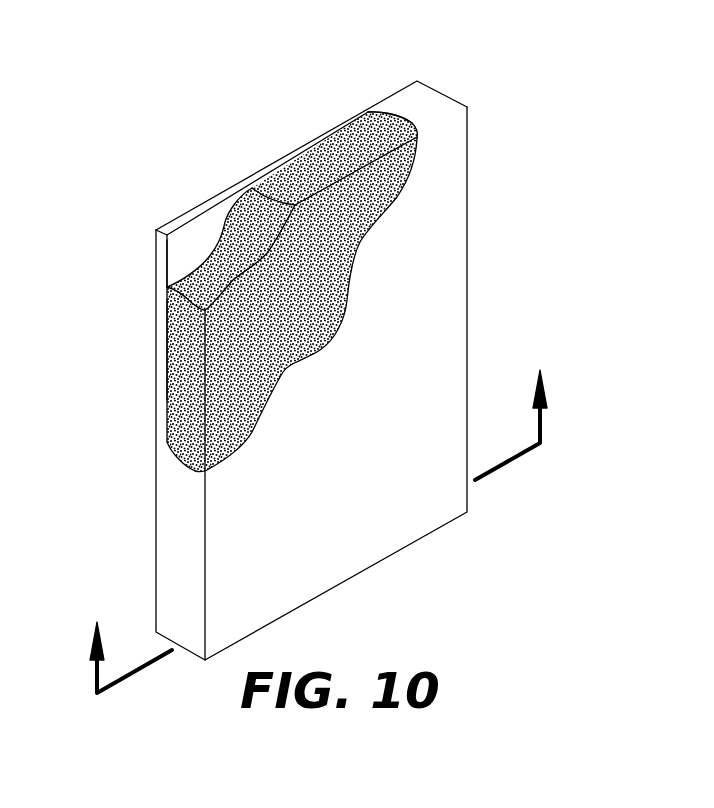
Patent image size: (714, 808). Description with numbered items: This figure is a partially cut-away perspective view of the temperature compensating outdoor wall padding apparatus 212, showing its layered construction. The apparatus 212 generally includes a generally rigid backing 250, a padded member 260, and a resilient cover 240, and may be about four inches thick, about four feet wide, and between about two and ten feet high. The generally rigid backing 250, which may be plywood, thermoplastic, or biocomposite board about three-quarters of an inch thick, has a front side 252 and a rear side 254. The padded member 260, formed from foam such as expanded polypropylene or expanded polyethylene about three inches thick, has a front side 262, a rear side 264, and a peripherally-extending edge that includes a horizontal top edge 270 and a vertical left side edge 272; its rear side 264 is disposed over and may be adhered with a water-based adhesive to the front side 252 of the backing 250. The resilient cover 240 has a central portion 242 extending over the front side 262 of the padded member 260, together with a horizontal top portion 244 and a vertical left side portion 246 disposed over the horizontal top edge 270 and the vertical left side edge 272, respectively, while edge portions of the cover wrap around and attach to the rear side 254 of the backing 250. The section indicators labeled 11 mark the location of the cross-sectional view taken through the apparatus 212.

The temperature compensating outdoor wall padding apparatus 212 is at (157, 97).
The resilient cover 240 is at (315, 369).
The central portion 242 is at (430, 245).
The horizontal top portion 244 is at (435, 107).
The vertical left side portion 246 is at (167, 512).
The generally rigid backing 250 is at (292, 142).
The front side 252 is at (172, 256).
The rear side 254 is at (168, 226).
The padded member 260 is at (180, 384).
The front side 262 is at (283, 358).
The rear side 264 is at (223, 228).
The horizontal top edge 270 is at (360, 137).
The vertical left side edge 272 is at (172, 330).
The section line 11- 11 is at (322, 516).